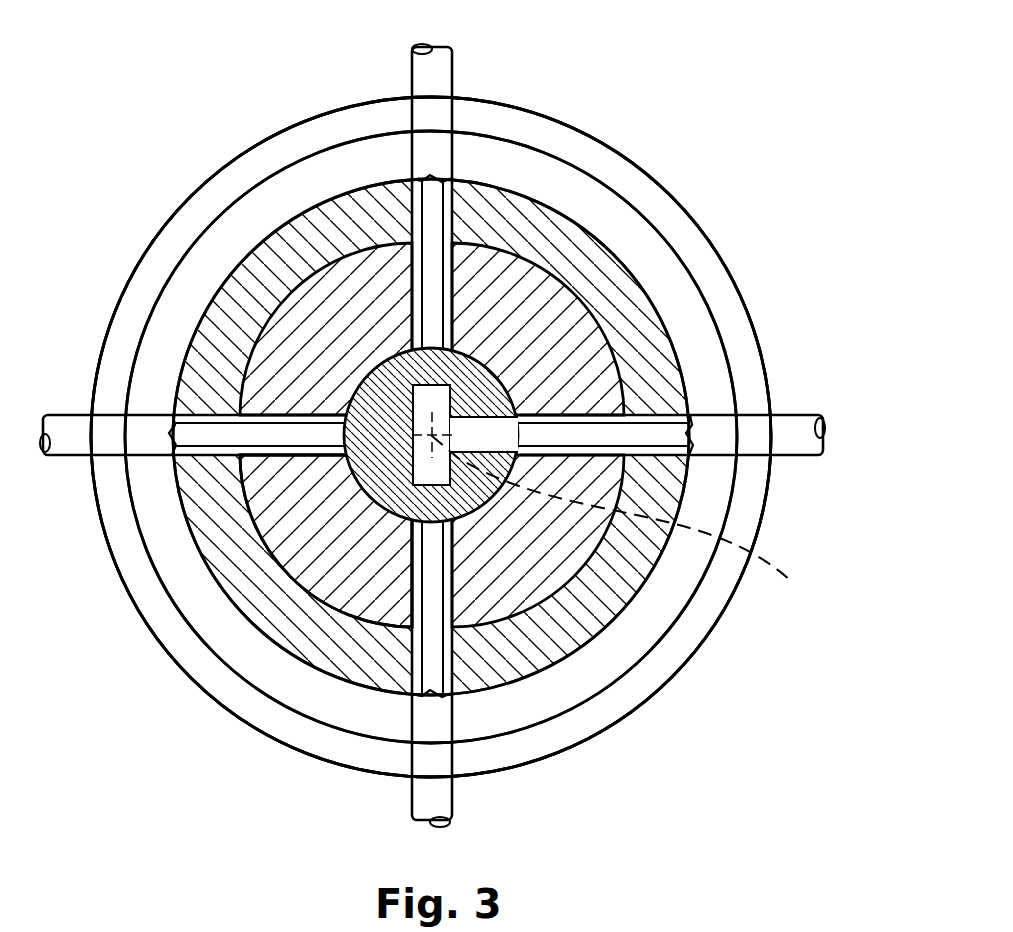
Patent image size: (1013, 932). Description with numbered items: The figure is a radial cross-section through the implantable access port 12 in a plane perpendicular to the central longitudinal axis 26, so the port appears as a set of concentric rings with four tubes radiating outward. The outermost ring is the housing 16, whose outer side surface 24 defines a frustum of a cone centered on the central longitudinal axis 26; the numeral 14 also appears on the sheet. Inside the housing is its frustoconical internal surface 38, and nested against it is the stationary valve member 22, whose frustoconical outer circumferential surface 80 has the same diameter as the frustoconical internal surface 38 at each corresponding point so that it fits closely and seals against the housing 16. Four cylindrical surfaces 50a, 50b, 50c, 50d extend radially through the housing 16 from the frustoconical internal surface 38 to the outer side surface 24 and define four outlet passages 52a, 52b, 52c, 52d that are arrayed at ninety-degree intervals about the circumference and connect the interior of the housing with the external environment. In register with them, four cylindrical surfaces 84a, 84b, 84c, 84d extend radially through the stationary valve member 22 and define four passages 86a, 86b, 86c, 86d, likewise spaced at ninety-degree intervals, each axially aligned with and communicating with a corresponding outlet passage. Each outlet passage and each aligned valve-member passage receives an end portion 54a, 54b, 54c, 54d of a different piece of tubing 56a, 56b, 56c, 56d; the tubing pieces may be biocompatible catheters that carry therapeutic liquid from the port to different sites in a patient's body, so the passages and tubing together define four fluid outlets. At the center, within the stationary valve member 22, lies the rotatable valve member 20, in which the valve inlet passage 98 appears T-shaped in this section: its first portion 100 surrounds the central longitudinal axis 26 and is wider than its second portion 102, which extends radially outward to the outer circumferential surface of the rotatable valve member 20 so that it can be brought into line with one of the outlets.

The implantable access port 12 is at (660, 120).
The base 14 is at (240, 916).
The housing 16 is at (680, 197).
The rotatable valve member 20 is at (665, 682).
The stationary valve member 22 is at (672, 292).
The outer side surface 24 is at (187, 528).
The central longitudinal axis 26 is at (622, 519).
The frustoconical internal surface 38 is at (290, 532).
The radially extending cylindrical surface 50a is at (655, 418).
The radially extending cylindrical surface 50b is at (437, 705).
The radially extending cylindrical surface 50c is at (200, 420).
The radially extending cylindrical surface 50d is at (413, 200).
The outlet passage 52a is at (680, 437).
The outlet passage 52b is at (410, 695).
The outlet passage 52c is at (220, 433).
The outlet passage 52d is at (392, 240).
The end portion of tubing 54a is at (668, 450).
The end portion of tubing 54b is at (405, 697).
The end portion of tubing 54c is at (175, 435).
The end portion of tubing 54d is at (447, 202).
The piece of tubing 56a is at (818, 440).
The piece of tubing 56b is at (442, 797).
The piece of tubing 56c is at (72, 432).
The piece of tubing 56d is at (434, 68).
The frustoconical outer circumferential surface 80 is at (722, 617).
The radially extending cylindrical surface 84a is at (603, 318).
The radially extending cylindrical surface 84b is at (433, 607).
The radially extending cylindrical surface 84c is at (262, 413).
The radially extending cylindrical surface 84d is at (340, 262).
The passage 86a is at (620, 413).
The passage 86b is at (540, 598).
The passage 86c is at (300, 340).
The passage 86d is at (350, 318).
The valve inlet passage 98 is at (318, 550).
The first portion of the valve inlet passage 100 is at (318, 550).
The second portion of the valve inlet passage 102 is at (497, 430).